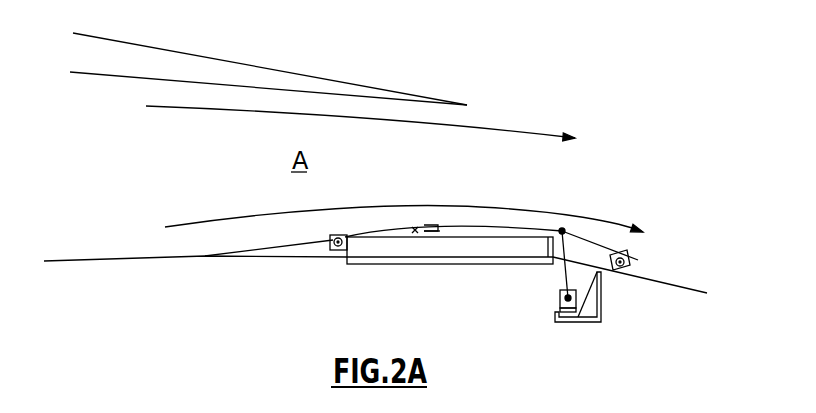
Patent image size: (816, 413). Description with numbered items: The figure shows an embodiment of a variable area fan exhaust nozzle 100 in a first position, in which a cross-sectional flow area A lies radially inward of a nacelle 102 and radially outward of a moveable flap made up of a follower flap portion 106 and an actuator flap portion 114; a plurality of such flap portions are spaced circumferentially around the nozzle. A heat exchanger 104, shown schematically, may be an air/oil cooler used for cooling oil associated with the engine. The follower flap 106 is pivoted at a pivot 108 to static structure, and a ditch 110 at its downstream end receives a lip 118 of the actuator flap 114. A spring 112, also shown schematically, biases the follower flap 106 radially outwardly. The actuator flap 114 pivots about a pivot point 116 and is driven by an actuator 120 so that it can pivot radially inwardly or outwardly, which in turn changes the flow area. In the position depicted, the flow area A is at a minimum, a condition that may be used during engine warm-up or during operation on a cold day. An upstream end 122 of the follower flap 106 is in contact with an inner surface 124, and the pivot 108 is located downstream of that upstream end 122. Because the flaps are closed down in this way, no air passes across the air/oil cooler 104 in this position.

The variable area fan exhaust nozzle 100 is at (537, 90).
The nacelle 102 is at (352, 88).
The heat exchanger 104 is at (362, 248).
The follower flap portion 106 is at (322, 238).
The pivot 108 is at (333, 247).
The ditch 110 is at (430, 224).
The spring 112 is at (440, 228).
The actuator flap portion 114 is at (586, 238).
The pivot point 116 is at (627, 266).
The lip 118 is at (432, 224).
The actuator 120 is at (558, 279).
The upstream end 122 is at (205, 255).
The inner surface 124 is at (78, 252).